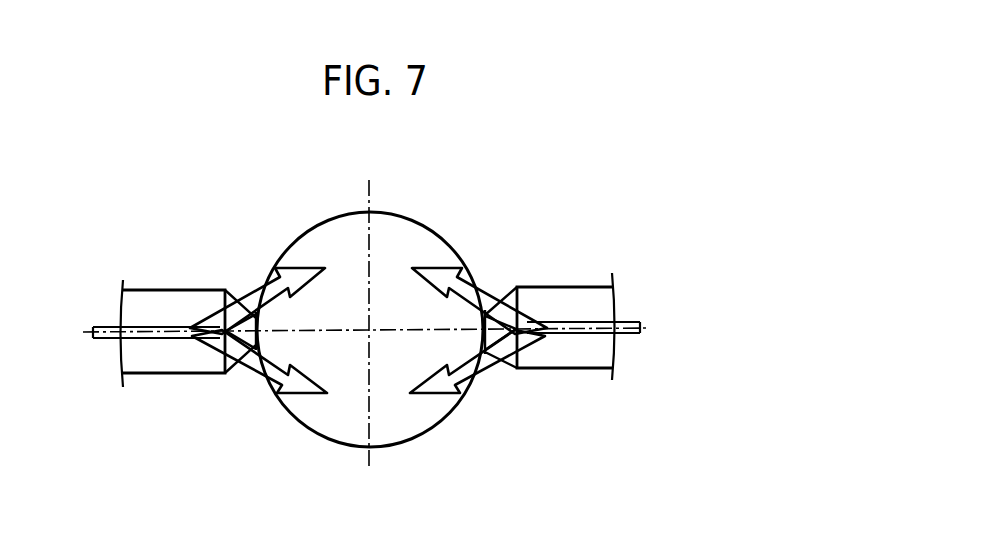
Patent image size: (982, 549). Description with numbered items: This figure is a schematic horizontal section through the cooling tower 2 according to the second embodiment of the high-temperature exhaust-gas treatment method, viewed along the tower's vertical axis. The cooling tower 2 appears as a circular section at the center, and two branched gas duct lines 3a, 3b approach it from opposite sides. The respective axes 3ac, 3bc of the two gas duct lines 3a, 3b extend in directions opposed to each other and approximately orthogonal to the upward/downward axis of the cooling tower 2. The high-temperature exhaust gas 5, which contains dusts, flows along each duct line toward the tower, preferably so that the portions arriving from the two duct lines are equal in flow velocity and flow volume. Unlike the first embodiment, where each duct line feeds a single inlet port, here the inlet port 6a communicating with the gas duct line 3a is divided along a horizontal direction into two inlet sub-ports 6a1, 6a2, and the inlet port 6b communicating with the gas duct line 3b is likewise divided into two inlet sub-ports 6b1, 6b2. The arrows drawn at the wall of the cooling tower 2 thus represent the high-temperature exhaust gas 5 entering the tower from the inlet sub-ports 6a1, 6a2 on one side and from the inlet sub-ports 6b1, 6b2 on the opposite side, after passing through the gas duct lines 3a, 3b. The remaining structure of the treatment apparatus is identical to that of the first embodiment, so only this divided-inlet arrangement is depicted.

The cooling tower 2 is at (400, 211).
The gas duct line 3a is at (178, 290).
The gas duct line 3b is at (557, 287).
The axis of gas duct line 3ac is at (327, 320).
The axis of gas duct line 3bc is at (413, 320).
The high-temperature exhaust gas 5 is at (107, 325).
The inlet port 6a is at (292, 478).
The inlet sub-port 6a1 is at (226, 374).
The inlet sub-port 6a2 is at (252, 368).
The inlet port 6b is at (633, 478).
The inlet sub-port 6b1 is at (516, 370).
The inlet sub-port 6b2 is at (488, 368).